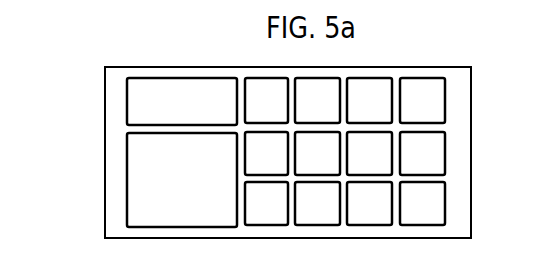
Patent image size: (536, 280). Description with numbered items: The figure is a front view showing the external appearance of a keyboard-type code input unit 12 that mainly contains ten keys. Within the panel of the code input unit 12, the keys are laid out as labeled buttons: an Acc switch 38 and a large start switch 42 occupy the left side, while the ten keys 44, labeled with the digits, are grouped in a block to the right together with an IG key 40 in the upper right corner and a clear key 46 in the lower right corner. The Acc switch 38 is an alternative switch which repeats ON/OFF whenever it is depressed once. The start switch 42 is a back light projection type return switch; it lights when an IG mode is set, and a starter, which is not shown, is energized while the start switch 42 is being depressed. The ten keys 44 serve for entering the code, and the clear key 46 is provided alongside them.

The code input unit 12 is at (96, 191).
The Acc switch 38 is at (141, 102).
The IG key 40 is at (443, 115).
The start switch 42 is at (203, 213).
The ten keys 44 is at (332, 218).
The clear key 46 is at (422, 218).